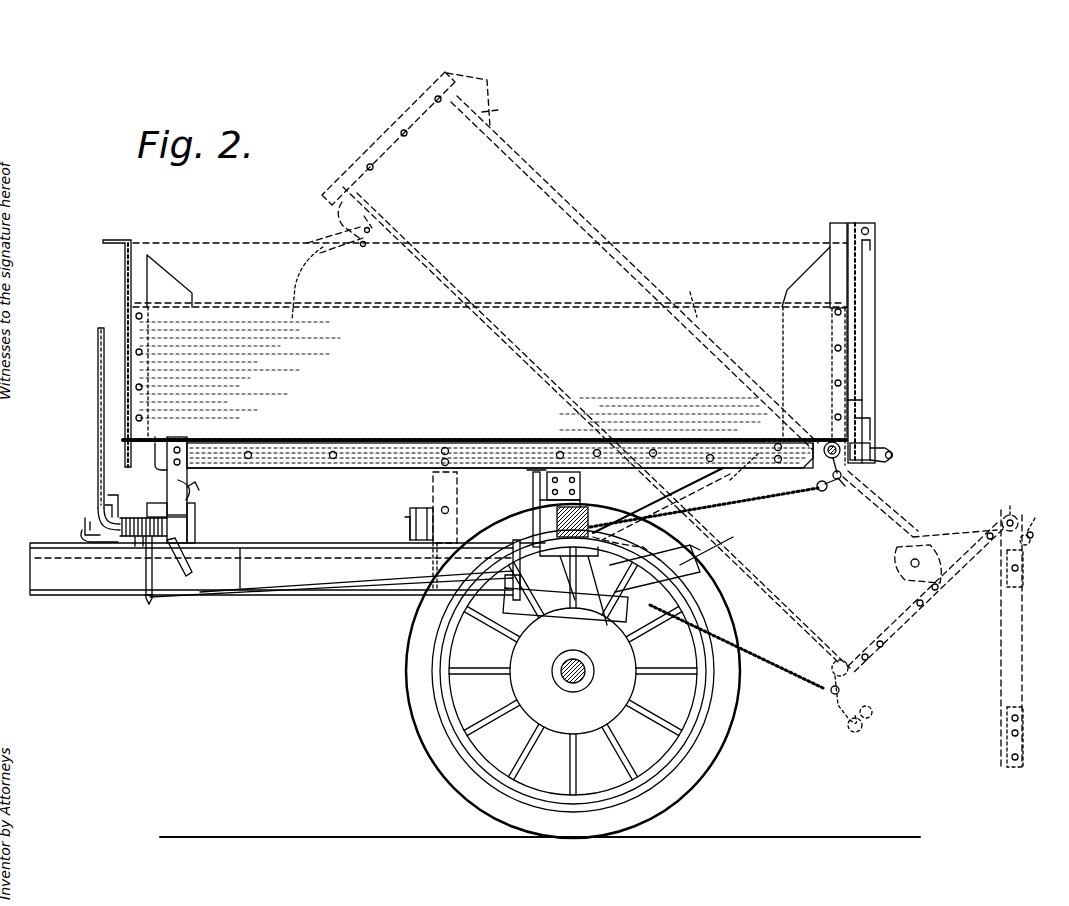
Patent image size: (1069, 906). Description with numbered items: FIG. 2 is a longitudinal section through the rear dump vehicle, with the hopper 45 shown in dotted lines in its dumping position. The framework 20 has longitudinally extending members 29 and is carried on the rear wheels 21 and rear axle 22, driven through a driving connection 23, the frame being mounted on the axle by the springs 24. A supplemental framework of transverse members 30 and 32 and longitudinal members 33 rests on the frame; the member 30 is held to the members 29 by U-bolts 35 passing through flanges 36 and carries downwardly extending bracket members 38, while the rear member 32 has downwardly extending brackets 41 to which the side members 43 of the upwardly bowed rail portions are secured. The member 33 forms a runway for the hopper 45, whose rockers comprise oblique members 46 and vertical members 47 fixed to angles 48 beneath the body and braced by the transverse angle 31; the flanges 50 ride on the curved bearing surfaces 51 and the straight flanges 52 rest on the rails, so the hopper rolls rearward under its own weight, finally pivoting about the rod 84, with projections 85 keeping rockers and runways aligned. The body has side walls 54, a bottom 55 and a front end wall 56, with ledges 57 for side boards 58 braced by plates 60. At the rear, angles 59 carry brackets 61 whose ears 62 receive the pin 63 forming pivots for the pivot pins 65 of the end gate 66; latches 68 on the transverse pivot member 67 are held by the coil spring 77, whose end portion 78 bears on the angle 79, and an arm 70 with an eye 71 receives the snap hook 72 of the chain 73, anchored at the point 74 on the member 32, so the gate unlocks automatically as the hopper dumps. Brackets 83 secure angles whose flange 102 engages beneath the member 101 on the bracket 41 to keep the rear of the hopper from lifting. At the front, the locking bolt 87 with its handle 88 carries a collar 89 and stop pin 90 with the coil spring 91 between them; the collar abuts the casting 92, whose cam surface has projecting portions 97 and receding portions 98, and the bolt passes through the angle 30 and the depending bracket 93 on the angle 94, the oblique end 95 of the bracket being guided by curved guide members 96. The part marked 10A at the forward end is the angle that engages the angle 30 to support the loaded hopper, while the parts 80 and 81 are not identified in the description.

The latch bracket 10A is at (330, 243).
The framework 20 is at (290, 553).
The rear wheels 21 is at (405, 654).
The rear axle 22 is at (588, 684).
The driving connection 23 is at (612, 612).
The springs 24 is at (565, 600).
The longitudinally extending members 29 is at (92, 580).
The transverse members 30 is at (180, 511).
The transversely extending angle 31 is at (415, 515).
The rear transverse member 32 is at (458, 503).
The longitudinally extending member 33 is at (262, 548).
The U-bolts 35 is at (150, 605).
The flanges 36 is at (143, 545).
The bracket member 38 is at (196, 536).
The brackets 41 is at (490, 612).
The side members 43 is at (677, 590).
The hopper 45 is at (305, 297).
The obliquely extending members 46 is at (722, 485).
The vertically extending members 47 is at (530, 418).
The angles 48 is at (404, 281).
The flanges 50 is at (716, 498).
The curved bearing surfaces 51 is at (600, 600).
The flanges 52 is at (413, 603).
The side walls 54 is at (728, 318).
The bottom 55 is at (340, 441).
The front end wall 56 is at (386, 128).
The ledges or flanges 57 is at (571, 307).
The side boards 58 is at (674, 246).
The angles 59 is at (833, 270).
The plates 60 is at (163, 256).
The brackets 61 is at (848, 224).
The ears 62 is at (876, 233).
The pin 63 is at (1024, 544).
The pivot pins 65 is at (865, 224).
The end gate 66 is at (1020, 643).
The pivot member 67 is at (863, 421).
The latches 68 is at (886, 452).
The arm 70 is at (840, 473).
The eye 71 is at (843, 489).
The snap hook 72 is at (823, 492).
The chain 73 is at (770, 508).
The point of attachment 74 is at (533, 493).
The coil spring 77 is at (820, 455).
The end portion 78 is at (849, 401).
The angle 79 is at (858, 434).
The arm 80 is at (641, 553).
The rod 81 is at (700, 555).
The brackets 83 is at (585, 535).
The rod 84 is at (666, 507).
The projections 85 is at (590, 513).
The locking bolt 87 is at (188, 526).
The handle 88 is at (98, 444).
The collar 89 is at (116, 516).
The stop pin 90 is at (140, 547).
The coil spring 91 is at (130, 525).
The casting 92 is at (108, 497).
The depending bracket member 93 is at (191, 465).
The angle 94 is at (92, 522).
The obliquely extending end portion 95 is at (180, 568).
The curved guide members 96 is at (193, 484).
The projecting portions 97 is at (95, 531).
The receding portions 98 is at (108, 508).
The horizontally extending member 101 is at (581, 483).
The horizontally extending flange 102 is at (581, 498).